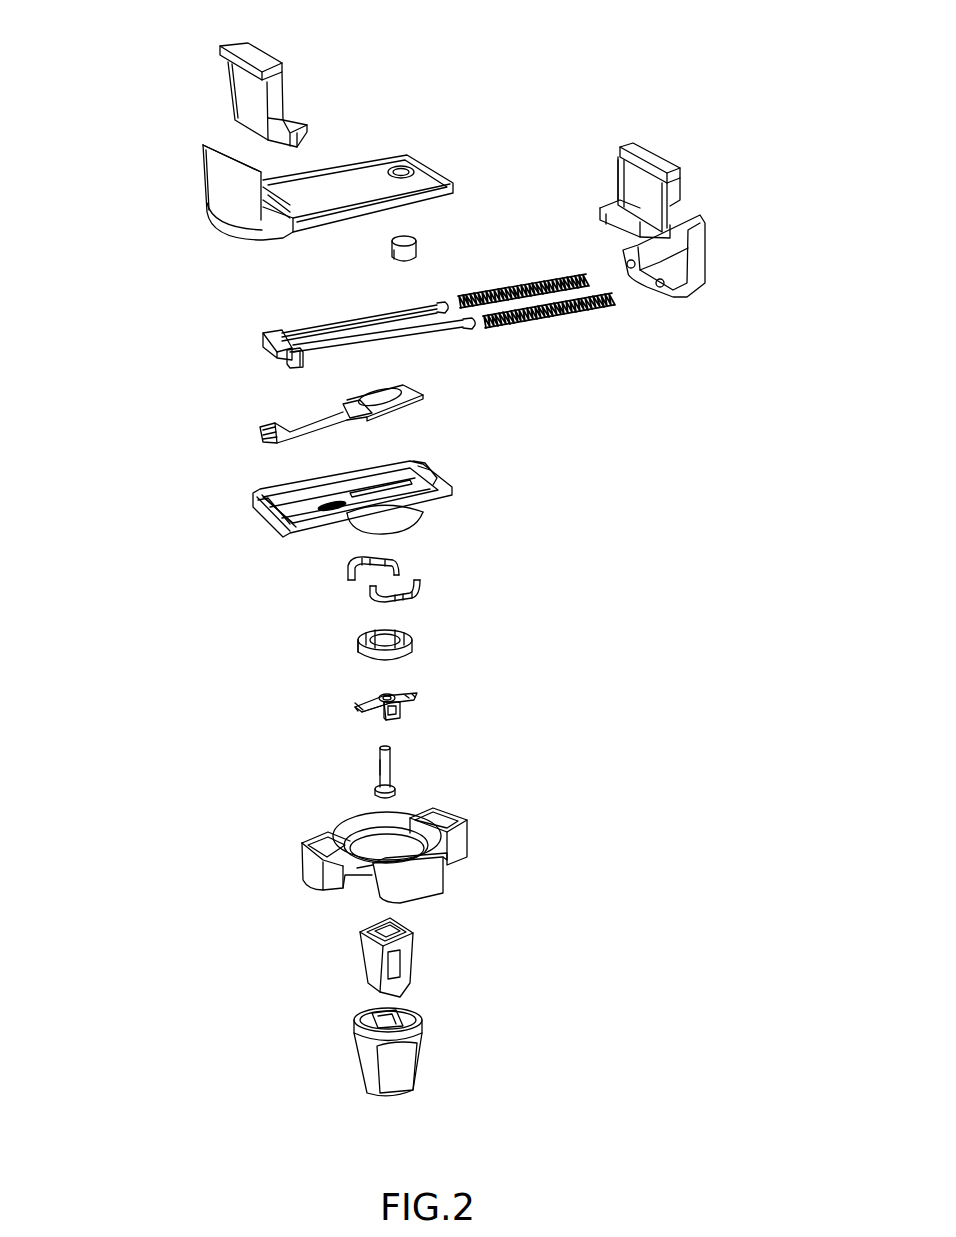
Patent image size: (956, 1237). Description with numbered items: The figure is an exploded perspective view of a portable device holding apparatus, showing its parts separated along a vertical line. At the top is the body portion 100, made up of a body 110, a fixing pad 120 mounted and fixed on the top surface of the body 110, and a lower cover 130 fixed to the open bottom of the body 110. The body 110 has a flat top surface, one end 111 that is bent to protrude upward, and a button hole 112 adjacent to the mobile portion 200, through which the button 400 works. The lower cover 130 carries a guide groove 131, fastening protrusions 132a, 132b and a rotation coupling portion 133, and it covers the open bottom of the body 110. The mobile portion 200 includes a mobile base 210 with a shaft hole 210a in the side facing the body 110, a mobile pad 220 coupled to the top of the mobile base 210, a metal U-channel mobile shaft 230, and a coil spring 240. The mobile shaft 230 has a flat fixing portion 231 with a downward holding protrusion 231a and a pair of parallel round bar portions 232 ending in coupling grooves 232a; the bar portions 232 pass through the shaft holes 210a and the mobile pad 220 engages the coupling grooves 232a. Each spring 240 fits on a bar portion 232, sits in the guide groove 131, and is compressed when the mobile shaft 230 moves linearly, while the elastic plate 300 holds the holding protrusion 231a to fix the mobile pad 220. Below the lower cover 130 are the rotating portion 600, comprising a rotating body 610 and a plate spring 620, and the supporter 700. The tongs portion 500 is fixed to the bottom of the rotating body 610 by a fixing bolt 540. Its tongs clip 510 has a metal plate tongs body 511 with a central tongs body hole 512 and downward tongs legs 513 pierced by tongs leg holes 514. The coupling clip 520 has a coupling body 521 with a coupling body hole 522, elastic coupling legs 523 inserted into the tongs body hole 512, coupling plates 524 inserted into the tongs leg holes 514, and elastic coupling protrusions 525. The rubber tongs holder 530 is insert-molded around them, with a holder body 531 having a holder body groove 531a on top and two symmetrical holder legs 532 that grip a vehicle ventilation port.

The body portion 100 is at (96, 507).
The body 110 is at (186, 180).
The one end of the body 111 is at (218, 190).
The button hole 112 is at (405, 171).
The fixing pad 120 is at (186, 87).
The lower cover 130 is at (186, 505).
The guide groove 131 is at (362, 473).
The fastening protrusion 132a is at (430, 476).
The fastening protrusion 132b is at (260, 517).
The rotation coupling portion 133 is at (420, 518).
The mobile portion 200 is at (790, 358).
The mobile base 210 is at (697, 240).
The shaft hole 210a is at (627, 263).
The mobile pad 220 is at (655, 157).
The mobile shaft 230 is at (435, 328).
The fixing portion 231 is at (268, 331).
The holding protrusion 231a is at (277, 358).
The bar portion 232 is at (363, 318).
The coupling groove 232a is at (438, 300).
The spring 240 is at (590, 302).
The elastic plate 300 is at (432, 408).
The button 400 is at (420, 253).
The tongs portion 500 is at (547, 1055).
The tongs clip 510 is at (462, 957).
The tongs body 511 is at (363, 932).
The tongs body hole 512 is at (397, 922).
The tongs leg 513 is at (383, 963).
The tongs leg hole 514 is at (400, 962).
The coupling clip 520 is at (462, 699).
The coupling body 521 is at (362, 695).
The coupling body hole 522 is at (387, 693).
The coupling leg 523 is at (378, 720).
The coupling plate 524 is at (402, 715).
The elastic coupling protrusion 525 is at (357, 708).
The tongs holder 530 is at (462, 1053).
The holder body 531 is at (355, 1035).
The holder body groove 531a is at (365, 1025).
The holder leg 532 is at (370, 1073).
The fixing bolt 540 is at (418, 768).
The rotating portion 600 is at (240, 573).
The rotating body 610 is at (320, 646).
The plate spring 620 is at (320, 577).
The supporter 700 is at (275, 857).